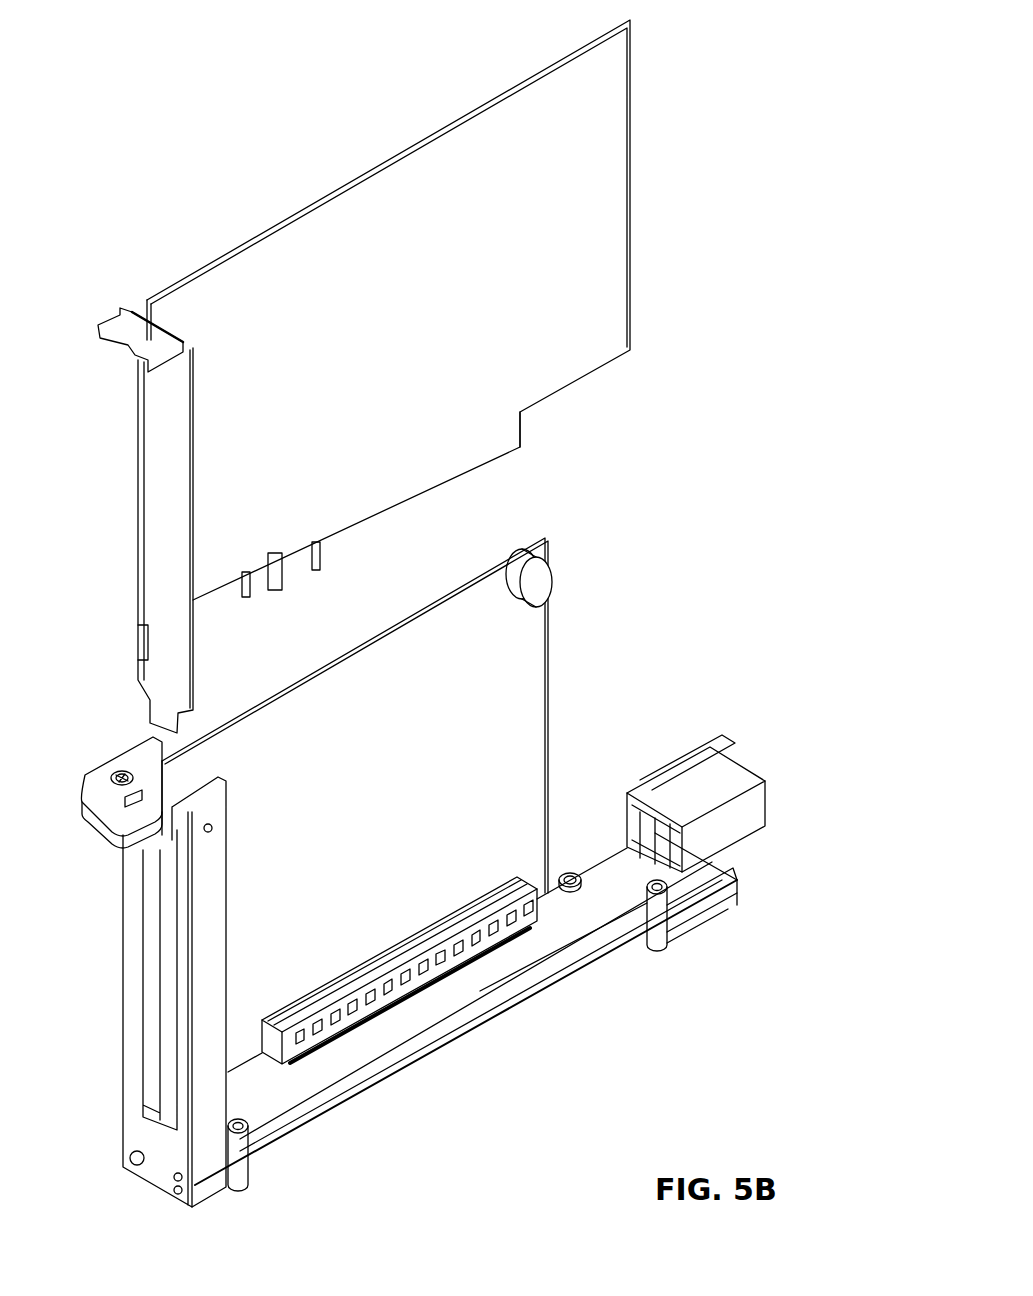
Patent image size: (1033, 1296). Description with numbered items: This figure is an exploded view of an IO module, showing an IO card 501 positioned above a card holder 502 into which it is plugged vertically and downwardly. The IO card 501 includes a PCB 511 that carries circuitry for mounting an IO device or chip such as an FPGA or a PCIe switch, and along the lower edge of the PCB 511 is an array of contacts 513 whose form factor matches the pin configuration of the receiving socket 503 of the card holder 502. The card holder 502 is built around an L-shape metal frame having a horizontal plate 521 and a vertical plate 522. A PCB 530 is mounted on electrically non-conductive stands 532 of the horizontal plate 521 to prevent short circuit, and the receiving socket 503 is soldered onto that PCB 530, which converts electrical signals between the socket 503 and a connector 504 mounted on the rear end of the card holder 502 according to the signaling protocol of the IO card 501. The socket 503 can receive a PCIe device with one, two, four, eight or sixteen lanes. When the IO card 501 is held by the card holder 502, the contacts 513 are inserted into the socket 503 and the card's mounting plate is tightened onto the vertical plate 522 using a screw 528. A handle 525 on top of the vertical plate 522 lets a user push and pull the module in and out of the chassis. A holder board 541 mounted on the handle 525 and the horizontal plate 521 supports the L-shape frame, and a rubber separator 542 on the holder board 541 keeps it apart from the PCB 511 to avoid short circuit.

The IO card 501 is at (410, 376).
The PCB 511 is at (515, 239).
The array of contacts 513 is at (521, 427).
The card holder 502 is at (469, 687).
The holder board 541 is at (550, 725).
The separator 542 is at (543, 582).
The handle 525 is at (100, 808).
The screw 528 is at (115, 770).
The vertical plate 522 is at (125, 1000).
The horizontal plate 521 is at (493, 1030).
The receiving socket 503 is at (372, 955).
The PCB 530 is at (620, 908).
The electrically non-conductive stands 532 is at (655, 920).
The connector 504 is at (750, 810).